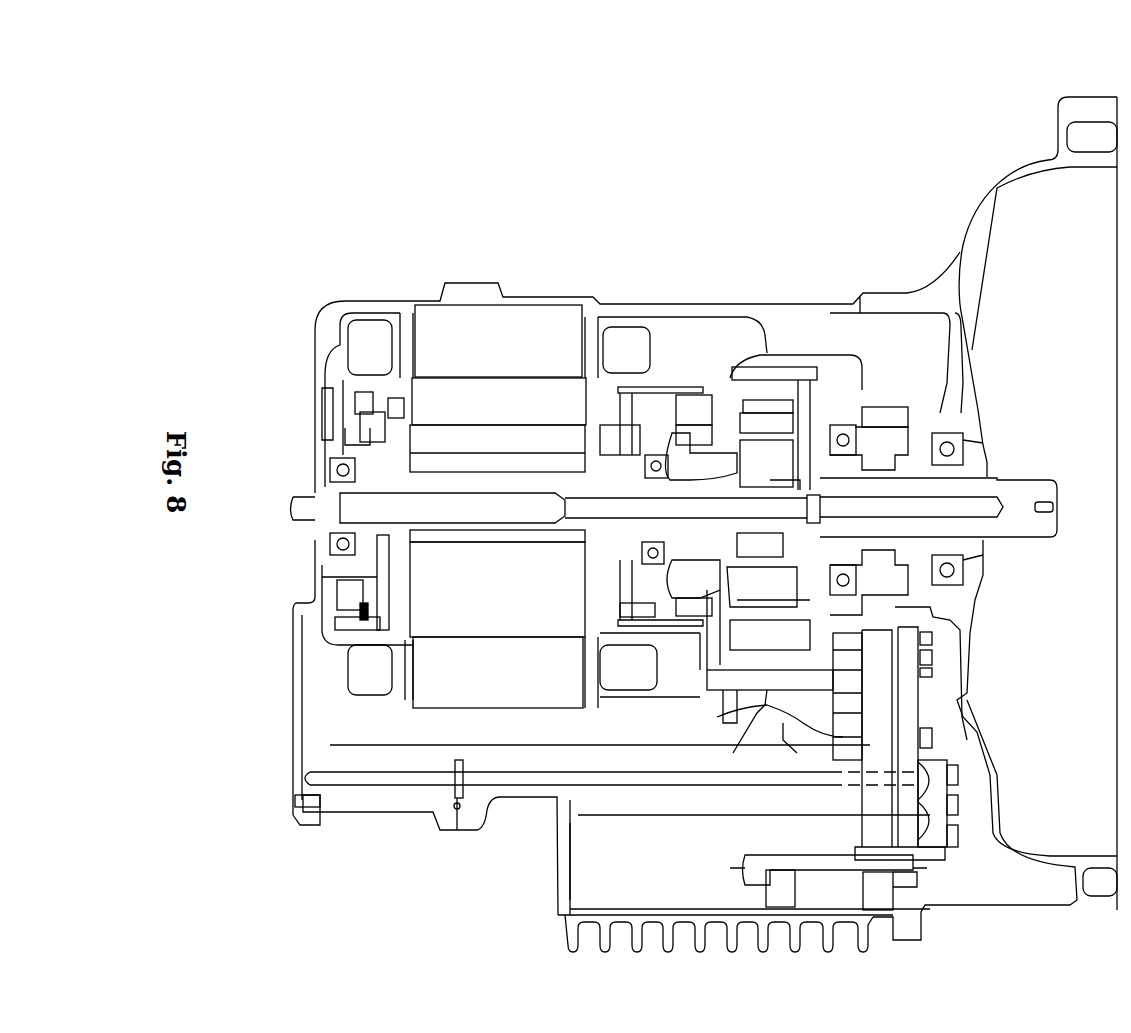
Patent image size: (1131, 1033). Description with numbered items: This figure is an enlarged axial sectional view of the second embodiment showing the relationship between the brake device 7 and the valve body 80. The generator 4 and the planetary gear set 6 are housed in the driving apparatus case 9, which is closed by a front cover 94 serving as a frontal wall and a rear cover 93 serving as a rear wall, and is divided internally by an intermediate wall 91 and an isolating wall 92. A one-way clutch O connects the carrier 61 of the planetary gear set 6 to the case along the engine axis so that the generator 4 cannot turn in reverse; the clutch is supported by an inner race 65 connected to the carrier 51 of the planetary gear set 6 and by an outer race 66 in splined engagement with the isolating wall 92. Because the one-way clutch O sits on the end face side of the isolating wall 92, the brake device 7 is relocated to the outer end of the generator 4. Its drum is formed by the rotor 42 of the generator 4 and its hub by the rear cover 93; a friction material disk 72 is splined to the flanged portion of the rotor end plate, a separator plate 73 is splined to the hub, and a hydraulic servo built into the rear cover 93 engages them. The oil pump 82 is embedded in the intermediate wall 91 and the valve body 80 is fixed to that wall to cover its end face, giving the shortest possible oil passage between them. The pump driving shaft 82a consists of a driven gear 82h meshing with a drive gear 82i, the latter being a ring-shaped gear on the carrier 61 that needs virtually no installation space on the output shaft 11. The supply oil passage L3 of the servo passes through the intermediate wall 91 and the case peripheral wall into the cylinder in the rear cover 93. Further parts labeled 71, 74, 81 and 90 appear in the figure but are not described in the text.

The generator 4 is at (522, 718).
The planetary gear set 6 is at (770, 353).
The brake device 7 is at (307, 413).
The driving apparatus case 9 is at (697, 297).
The output shaft 11 is at (1013, 488).
The rotor 42 is at (481, 599).
The carrier 51 is at (888, 415).
The carrier 61 is at (745, 608).
The inner race 65 is at (670, 447).
The outer race 66 is at (697, 403).
The resolver stator 71 is at (375, 423).
The friction material disk 72 is at (370, 410).
The separator plate 73 is at (345, 437).
The resolver housing 74 is at (322, 392).
The valve body 80 is at (907, 722).
The brake actuator 81 is at (797, 863).
The oil pump 82 is at (857, 658).
The pump driving shaft 82a is at (768, 688).
The driven gear 82h is at (745, 688).
The drive gear 82i is at (710, 597).
The lower case 90 is at (653, 896).
The intermediate wall 91 is at (858, 395).
The isolating wall 92 is at (712, 393).
The rear cover 93 is at (380, 300).
The front cover 94 is at (957, 243).
The one-way clutch O is at (670, 378).
The supply oil passage L3 is at (520, 783).